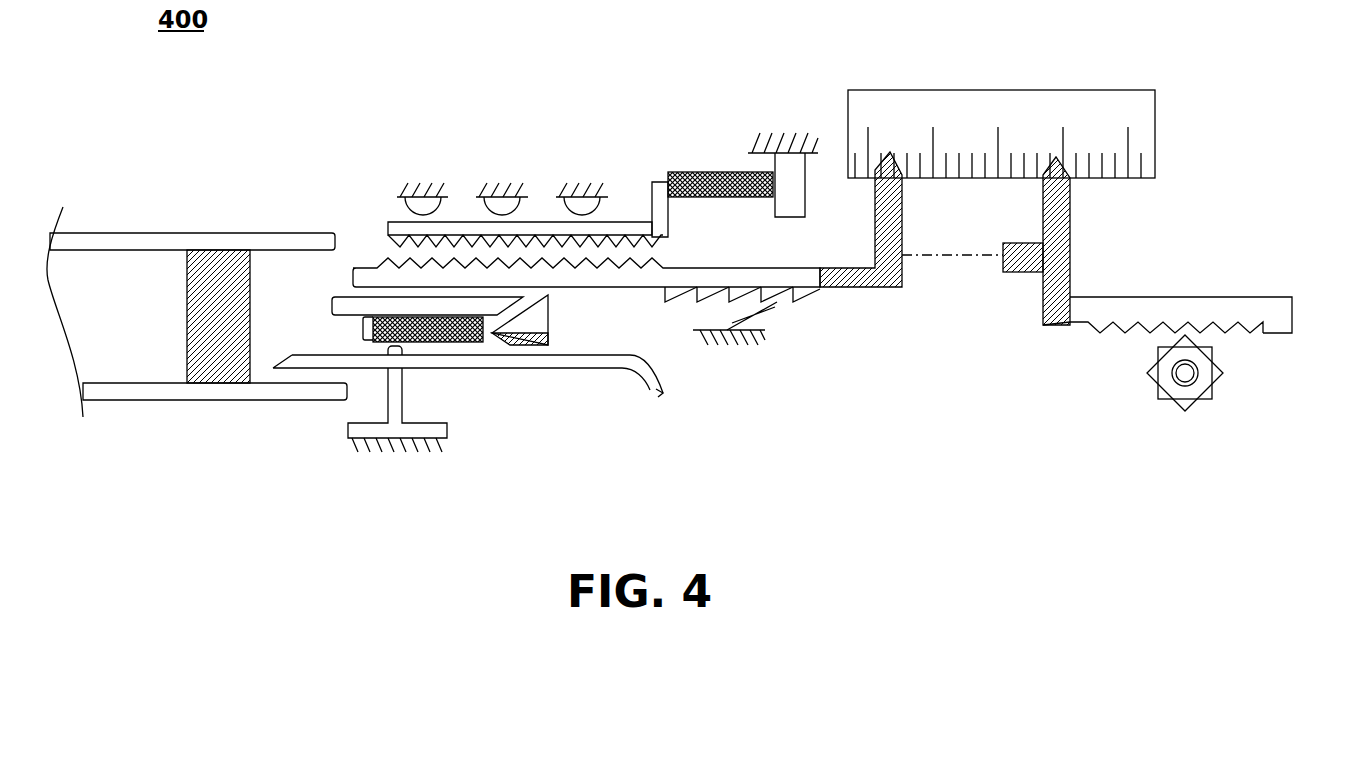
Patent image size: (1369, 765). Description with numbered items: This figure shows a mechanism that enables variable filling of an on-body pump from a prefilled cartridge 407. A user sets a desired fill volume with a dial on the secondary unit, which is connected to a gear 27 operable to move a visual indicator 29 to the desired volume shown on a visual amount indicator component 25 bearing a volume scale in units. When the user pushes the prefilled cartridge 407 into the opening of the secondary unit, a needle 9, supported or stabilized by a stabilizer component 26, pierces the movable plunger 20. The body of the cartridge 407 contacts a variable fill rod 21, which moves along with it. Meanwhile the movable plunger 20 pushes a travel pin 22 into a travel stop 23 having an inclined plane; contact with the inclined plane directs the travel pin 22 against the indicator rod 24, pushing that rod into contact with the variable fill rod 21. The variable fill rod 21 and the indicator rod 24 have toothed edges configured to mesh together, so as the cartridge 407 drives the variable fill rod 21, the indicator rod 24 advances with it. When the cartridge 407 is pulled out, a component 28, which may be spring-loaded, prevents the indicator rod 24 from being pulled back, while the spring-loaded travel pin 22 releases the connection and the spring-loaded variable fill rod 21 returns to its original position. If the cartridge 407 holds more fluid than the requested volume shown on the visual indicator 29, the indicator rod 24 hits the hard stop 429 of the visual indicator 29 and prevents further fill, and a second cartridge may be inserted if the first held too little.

The prefilled cartridge 407 is at (112, 400).
The movable plunger 20 is at (187, 273).
The travel pin 22 is at (325, 293).
The travel stop 23 is at (549, 318).
The variable fill rod 21 is at (655, 182).
The indicator rod 24 is at (807, 298).
The component 28 is at (770, 312).
The visual amount indicator component 25 is at (1117, 178).
The hard stop 429 is at (1010, 275).
The visual indicator 29 is at (1292, 312).
The gear 27 is at (1223, 373).
The needle 9 is at (583, 370).
The stabilizer component 26 is at (352, 452).